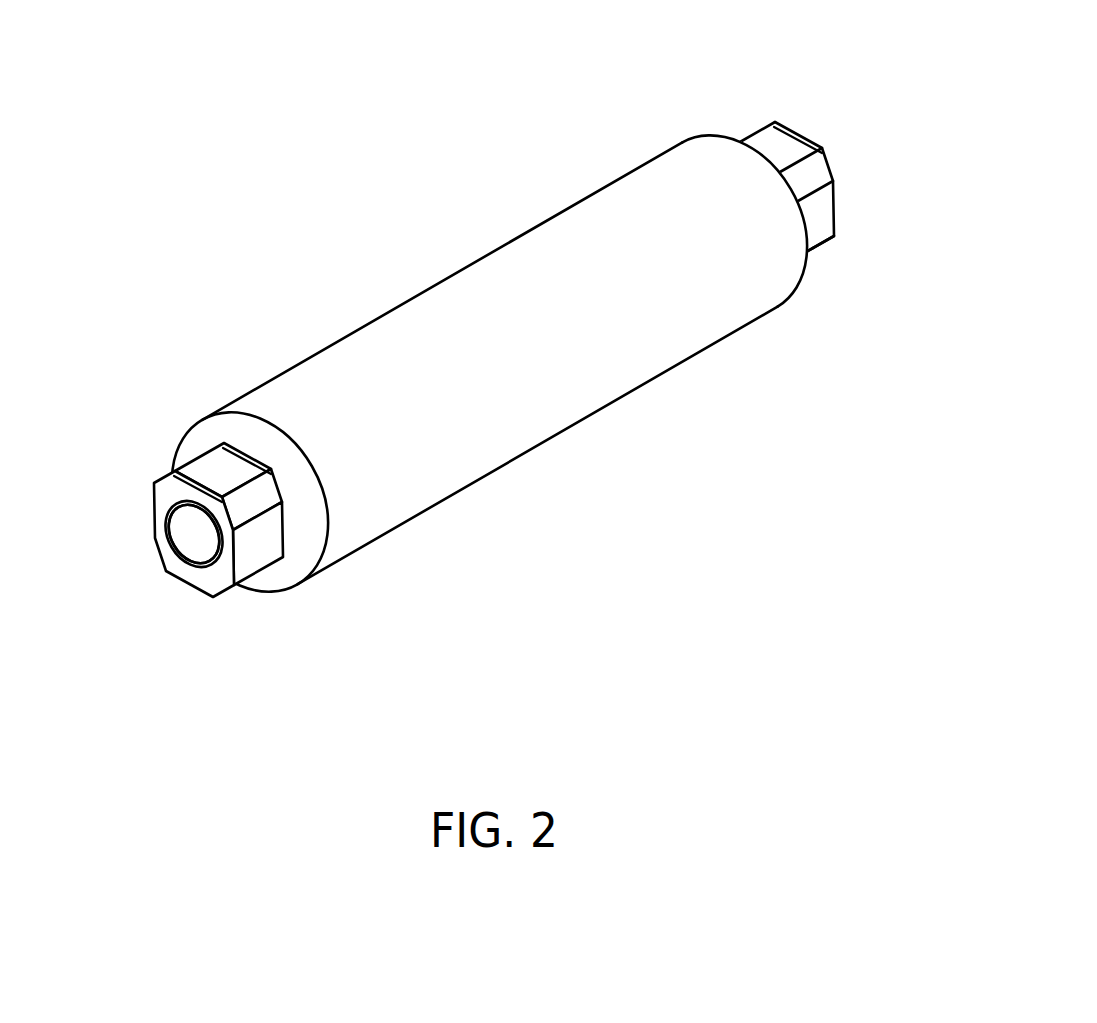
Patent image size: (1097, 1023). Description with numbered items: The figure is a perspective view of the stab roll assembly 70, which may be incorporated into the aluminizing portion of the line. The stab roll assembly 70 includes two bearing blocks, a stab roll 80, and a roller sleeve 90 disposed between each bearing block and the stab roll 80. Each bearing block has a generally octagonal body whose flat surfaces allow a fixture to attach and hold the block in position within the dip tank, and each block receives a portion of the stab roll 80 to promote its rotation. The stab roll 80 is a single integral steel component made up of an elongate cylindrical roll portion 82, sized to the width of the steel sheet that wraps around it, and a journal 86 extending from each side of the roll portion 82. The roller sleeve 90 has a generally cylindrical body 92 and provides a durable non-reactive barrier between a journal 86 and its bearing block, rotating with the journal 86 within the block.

The stab roll assembly 70 is at (320, 158).
The stab roll 80 is at (534, 492).
The roll portion 82 is at (407, 505).
The journal 86 is at (187, 530).
The roller sleeve 90 is at (162, 511).
The cylindrical body 92 is at (175, 553).